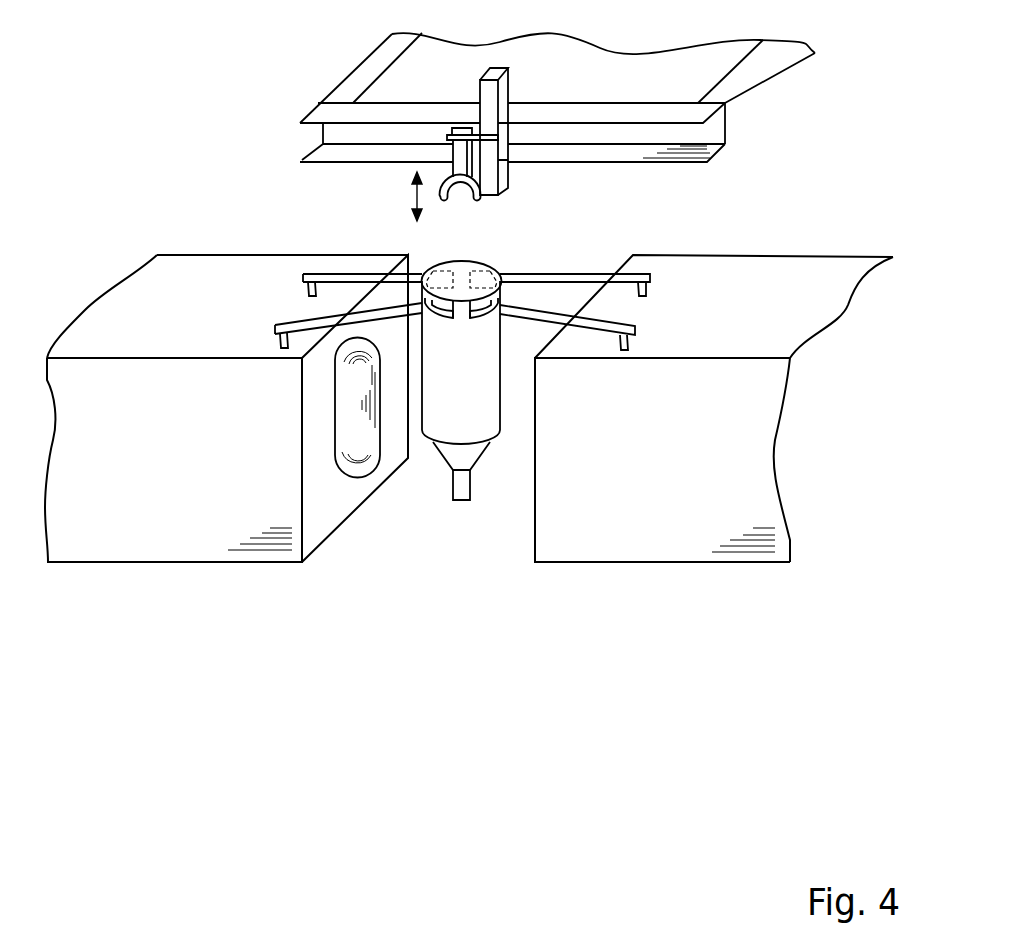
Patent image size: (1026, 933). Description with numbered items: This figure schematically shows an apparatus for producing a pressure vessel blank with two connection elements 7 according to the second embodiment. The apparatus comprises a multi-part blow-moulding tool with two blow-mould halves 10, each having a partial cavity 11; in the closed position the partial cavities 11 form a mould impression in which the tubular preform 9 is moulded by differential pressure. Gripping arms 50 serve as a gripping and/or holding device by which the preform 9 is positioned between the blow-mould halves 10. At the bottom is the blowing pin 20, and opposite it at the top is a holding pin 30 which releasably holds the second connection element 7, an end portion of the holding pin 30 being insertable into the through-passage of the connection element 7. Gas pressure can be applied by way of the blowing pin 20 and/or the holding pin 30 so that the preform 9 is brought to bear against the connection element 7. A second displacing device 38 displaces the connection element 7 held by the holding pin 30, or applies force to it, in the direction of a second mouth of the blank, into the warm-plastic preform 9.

The connection element 7 is at (459, 182).
The preform 9 is at (488, 413).
The blow-mould half 10 is at (178, 533).
The partial cavity 11 is at (348, 427).
The blowing pin 20 is at (462, 488).
The holding pin 30 is at (463, 158).
The second displacing device 38 is at (503, 138).
The gripping arms 50 is at (348, 274).